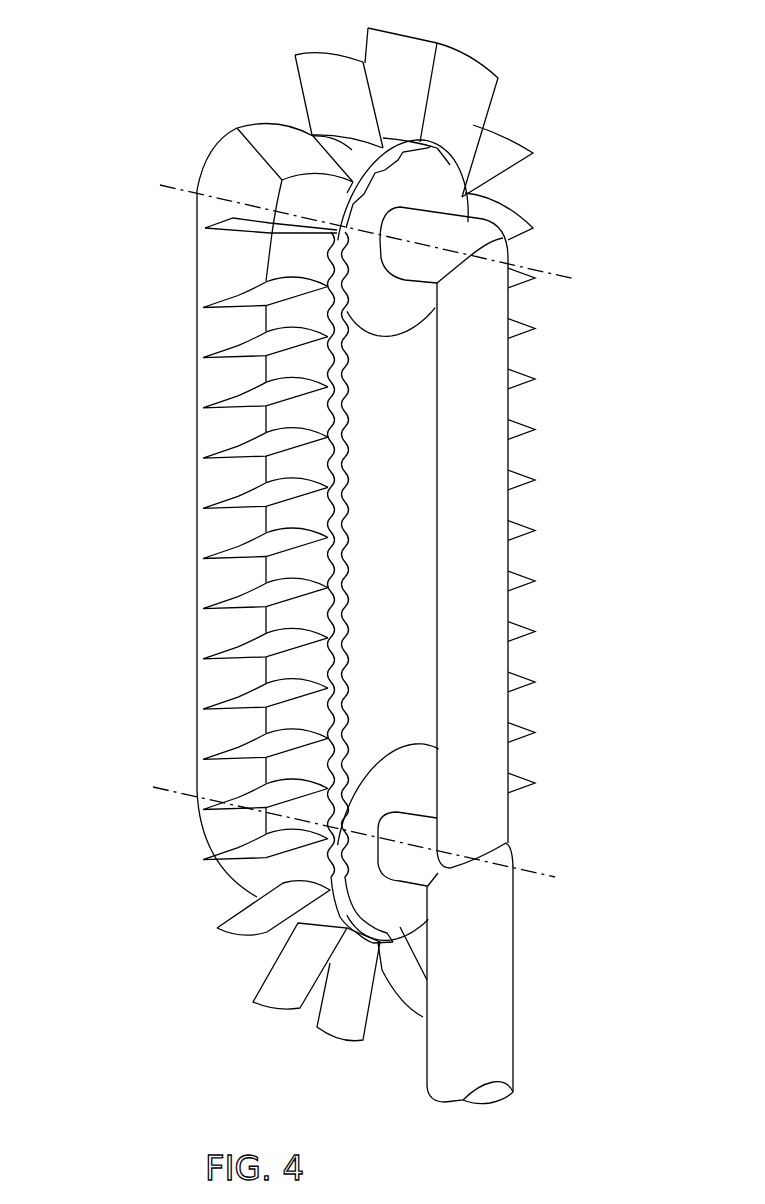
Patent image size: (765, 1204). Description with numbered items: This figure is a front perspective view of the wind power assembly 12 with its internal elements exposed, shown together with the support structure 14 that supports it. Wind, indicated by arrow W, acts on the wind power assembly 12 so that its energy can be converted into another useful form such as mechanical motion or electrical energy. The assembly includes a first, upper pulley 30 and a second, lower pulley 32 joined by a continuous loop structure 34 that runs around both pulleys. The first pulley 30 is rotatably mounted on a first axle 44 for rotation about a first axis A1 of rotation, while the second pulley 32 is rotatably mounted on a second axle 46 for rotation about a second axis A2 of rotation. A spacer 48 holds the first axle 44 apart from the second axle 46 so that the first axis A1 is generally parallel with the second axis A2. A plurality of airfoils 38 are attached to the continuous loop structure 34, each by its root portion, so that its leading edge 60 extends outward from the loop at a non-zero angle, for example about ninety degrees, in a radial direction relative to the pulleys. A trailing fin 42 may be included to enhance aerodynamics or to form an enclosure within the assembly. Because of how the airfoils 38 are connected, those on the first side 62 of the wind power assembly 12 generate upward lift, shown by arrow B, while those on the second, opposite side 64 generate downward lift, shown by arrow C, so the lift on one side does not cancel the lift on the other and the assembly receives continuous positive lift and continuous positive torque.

The wind power assembly 12 is at (556, 188).
The support structure 14 is at (508, 1033).
The first, upper pulley 30 is at (443, 180).
The second, lower pulley 32 is at (418, 781).
The continuous loop structure 34 is at (263, 271).
The airfoils 38 is at (260, 125).
The trailing fin 42 is at (215, 180).
The first axle 44 is at (407, 270).
The second axle 46 is at (400, 878).
The spacer 48 is at (500, 504).
The leading edge 60 is at (491, 101).
The first side 62 is at (167, 630).
The second, opposite side 64 is at (542, 448).
The first axis of rotation A1 is at (540, 280).
The second axis of rotation A2 is at (532, 884).
The upward lift B is at (110, 507).
The downward lift C is at (598, 312).
The wind W is at (652, 549).